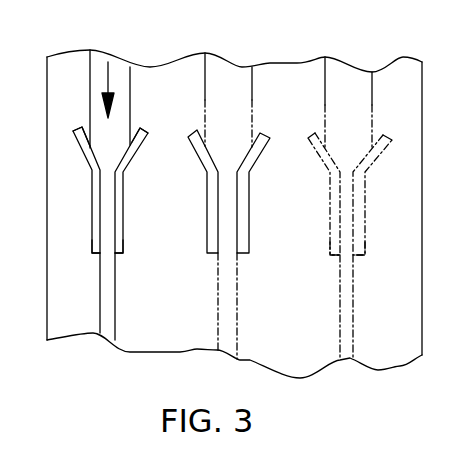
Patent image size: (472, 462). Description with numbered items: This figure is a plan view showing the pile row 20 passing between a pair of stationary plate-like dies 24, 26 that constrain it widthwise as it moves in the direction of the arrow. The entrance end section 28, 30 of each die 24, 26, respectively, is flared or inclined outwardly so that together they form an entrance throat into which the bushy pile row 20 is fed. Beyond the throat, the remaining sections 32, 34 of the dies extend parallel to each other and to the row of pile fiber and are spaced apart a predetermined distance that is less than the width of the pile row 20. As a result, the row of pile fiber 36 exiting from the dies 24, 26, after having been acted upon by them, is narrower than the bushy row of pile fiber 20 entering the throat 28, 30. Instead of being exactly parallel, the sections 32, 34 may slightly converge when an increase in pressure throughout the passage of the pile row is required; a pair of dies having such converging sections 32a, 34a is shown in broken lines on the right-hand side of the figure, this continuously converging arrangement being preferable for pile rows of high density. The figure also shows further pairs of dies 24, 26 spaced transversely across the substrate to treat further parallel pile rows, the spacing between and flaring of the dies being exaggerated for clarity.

The pile row 20 is at (112, 32).
The die 24 is at (80, 214).
The die 26 is at (158, 210).
The entrance end section 28 is at (85, 155).
The entrance end section 30 is at (137, 150).
The remaining section 32 is at (92, 245).
The remaining section 34 is at (123, 243).
The row of pile fiber exiting from the dies 36 is at (114, 304).
The converging section 32a is at (330, 248).
The converging section 34a is at (355, 246).